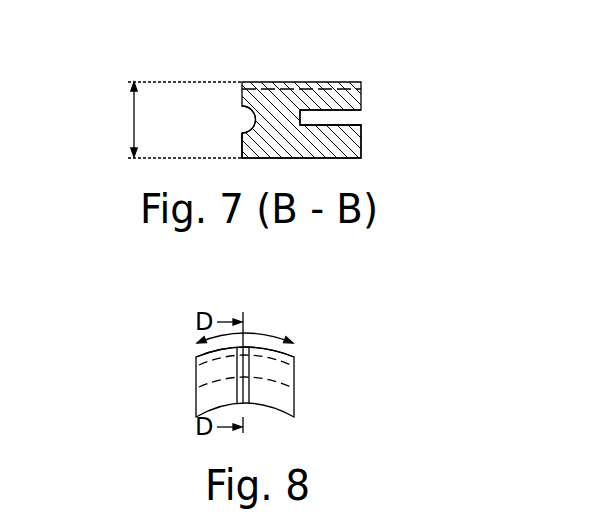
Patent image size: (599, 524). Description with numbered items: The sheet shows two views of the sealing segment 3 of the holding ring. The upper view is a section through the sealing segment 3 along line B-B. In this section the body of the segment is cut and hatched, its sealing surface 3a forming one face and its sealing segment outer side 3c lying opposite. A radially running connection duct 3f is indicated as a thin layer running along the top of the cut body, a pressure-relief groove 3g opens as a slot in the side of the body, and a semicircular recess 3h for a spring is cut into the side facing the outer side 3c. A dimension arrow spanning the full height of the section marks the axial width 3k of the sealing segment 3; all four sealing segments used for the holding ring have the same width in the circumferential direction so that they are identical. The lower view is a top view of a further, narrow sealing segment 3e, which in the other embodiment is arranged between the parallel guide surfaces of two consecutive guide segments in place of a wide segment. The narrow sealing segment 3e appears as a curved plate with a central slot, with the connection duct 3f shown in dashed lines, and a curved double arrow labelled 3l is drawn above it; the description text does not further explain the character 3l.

In FIG. 7, the sealing segment 3 is at (382, 72).
In FIG. 8, the sealing segment 3 is at (245, 382).
In FIG. 7, the sealing surface 3a is at (374, 148).
In FIG. 7, the sealing segment outer side 3c is at (230, 135).
In FIG. 8, the narrow sealing segment 3e is at (323, 368).
In FIG. 7, the connection duct 3f is at (298, 86).
In FIG. 8, the connection duct 3f is at (243, 368).
In FIG. 7, the pressure-relief groove 3g is at (356, 118).
In FIG. 7, the recess for a spring 3h is at (235, 124).
In FIG. 7, the axial width 3k is at (173, 120).
In FIG. 8, the arc length 3l is at (270, 335).